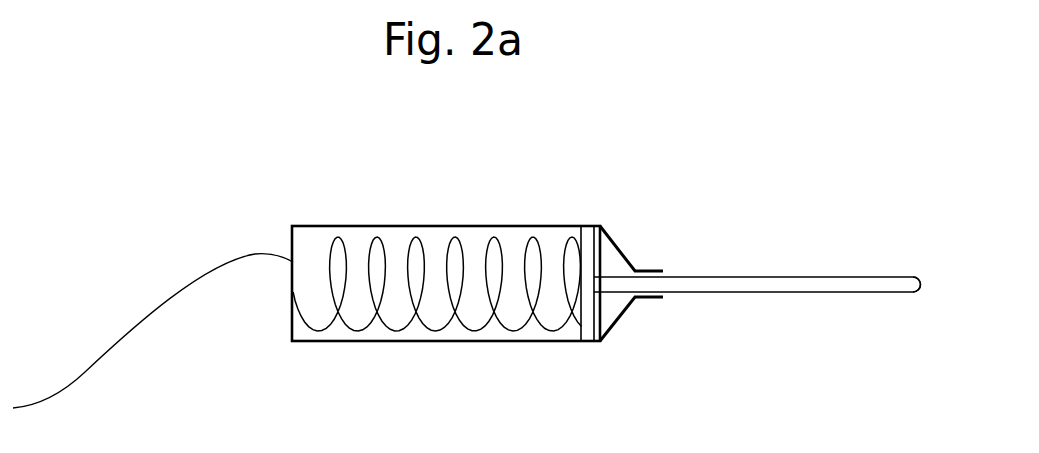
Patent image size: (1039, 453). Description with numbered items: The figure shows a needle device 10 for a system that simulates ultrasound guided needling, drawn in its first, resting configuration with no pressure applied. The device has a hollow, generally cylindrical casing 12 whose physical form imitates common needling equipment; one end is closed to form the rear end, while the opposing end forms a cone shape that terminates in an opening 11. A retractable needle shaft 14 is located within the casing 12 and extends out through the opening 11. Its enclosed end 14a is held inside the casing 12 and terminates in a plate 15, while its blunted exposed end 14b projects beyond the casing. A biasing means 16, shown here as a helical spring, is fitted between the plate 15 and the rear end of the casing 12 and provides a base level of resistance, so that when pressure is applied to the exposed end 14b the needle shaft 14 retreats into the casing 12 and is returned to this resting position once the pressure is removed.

The needle device 10 is at (673, 122).
The opening 11 is at (663, 275).
The casing 12 is at (318, 343).
The needle shaft 14 is at (792, 275).
The enclosed end 14a is at (598, 262).
The exposed end 14b is at (919, 292).
The plate 15 is at (587, 343).
The biasing means 16 is at (412, 240).